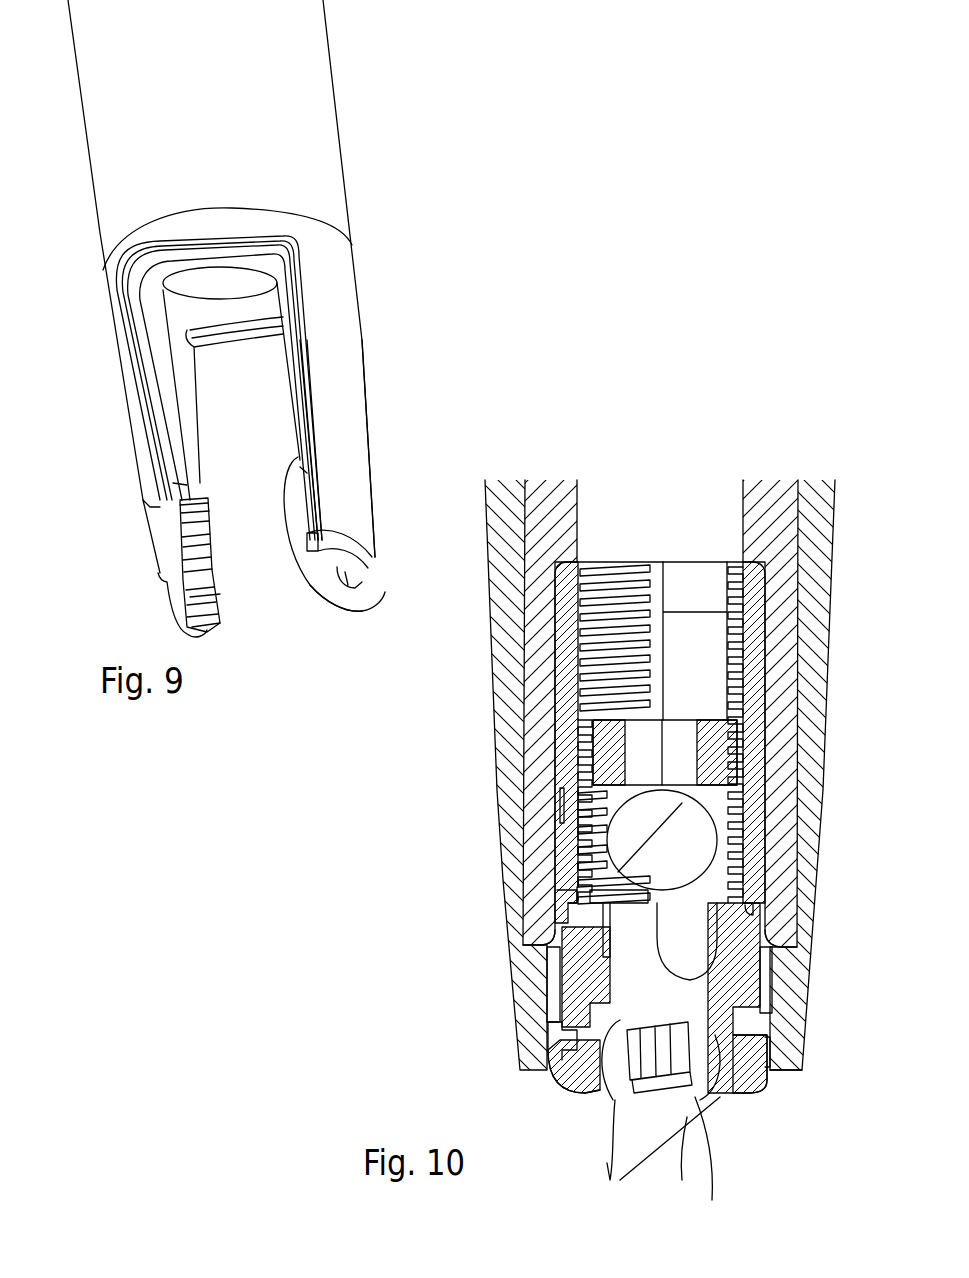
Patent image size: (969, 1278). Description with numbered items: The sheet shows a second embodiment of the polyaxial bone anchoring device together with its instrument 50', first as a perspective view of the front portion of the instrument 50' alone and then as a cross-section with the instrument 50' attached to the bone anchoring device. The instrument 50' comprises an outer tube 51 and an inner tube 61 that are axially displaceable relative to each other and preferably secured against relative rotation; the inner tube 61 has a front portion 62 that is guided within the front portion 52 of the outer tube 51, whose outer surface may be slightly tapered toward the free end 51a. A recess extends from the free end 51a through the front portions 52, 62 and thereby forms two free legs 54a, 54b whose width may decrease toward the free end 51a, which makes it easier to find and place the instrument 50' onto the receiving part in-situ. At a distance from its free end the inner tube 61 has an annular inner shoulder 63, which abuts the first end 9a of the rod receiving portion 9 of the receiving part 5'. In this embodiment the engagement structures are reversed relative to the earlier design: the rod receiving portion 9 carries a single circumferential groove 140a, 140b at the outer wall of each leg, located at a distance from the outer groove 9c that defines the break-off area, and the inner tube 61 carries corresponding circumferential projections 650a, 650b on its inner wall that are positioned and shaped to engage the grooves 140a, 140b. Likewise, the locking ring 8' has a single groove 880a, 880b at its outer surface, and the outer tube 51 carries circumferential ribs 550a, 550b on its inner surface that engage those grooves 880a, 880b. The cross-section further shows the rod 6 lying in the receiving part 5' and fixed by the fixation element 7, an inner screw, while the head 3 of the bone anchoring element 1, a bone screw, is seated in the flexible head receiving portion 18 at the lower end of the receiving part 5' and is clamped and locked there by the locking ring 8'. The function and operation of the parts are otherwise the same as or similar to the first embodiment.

In FIG. 9, the instrument 50' is at (401, 107).
In FIG. 9, the outer tube 51 is at (120, 166).
In FIG. 10, the outer tube 51 is at (826, 548).
In FIG. 9, the free end of the outer tube 51a is at (368, 571).
In FIG. 9, the front portion of the outer tube 52 is at (360, 345).
In FIG. 9, the first free leg 54a is at (125, 428).
In FIG. 9, the second free leg 54b is at (355, 395).
In FIG. 9, the inner tube 61 is at (170, 312).
In FIG. 10, the inner tube 61 is at (789, 601).
In FIG. 9, the front portion of the inner tube 62 is at (153, 388).
In FIG. 9, the inner shoulder 63 is at (255, 290).
In FIG. 10, the inner shoulder 63 is at (575, 572).
In FIG. 9, the first circumferential rib 550a is at (182, 637).
In FIG. 10, the first circumferential rib 550a is at (570, 1063).
In FIG. 9, the second circumferential rib 550b is at (343, 606).
In FIG. 10, the second circumferential rib 550b is at (772, 1053).
In FIG. 9, the first circumferential projection 650a is at (213, 513).
In FIG. 10, the first circumferential projection 650a is at (560, 908).
In FIG. 9, the second circumferential projection 650b is at (292, 557).
In FIG. 10, the second circumferential projection 650b is at (760, 925).
In FIG. 10, the rod receiving portion 9 is at (561, 975).
In FIG. 10, the first end of the rod receiving portion 9a is at (590, 566).
In FIG. 10, the circumferential groove 9c is at (562, 808).
In FIG. 10, the fixation element 7 is at (708, 741).
In FIG. 10, the rod 6 is at (690, 812).
In FIG. 10, the first groove 140a is at (568, 902).
In FIG. 10, the second groove 140b is at (756, 898).
In FIG. 10, the receiving part 5' is at (723, 991).
In FIG. 10, the locking ring 8' is at (833, 1007).
In FIG. 10, the head receiving portion 18 is at (578, 1048).
In FIG. 10, the first groove of the locking ring 880a is at (560, 1078).
In FIG. 10, the second groove of the locking ring 880b is at (755, 1080).
In FIG. 10, the bone anchoring element 1 is at (684, 1160).
In FIG. 10, the head 3 is at (718, 1100).